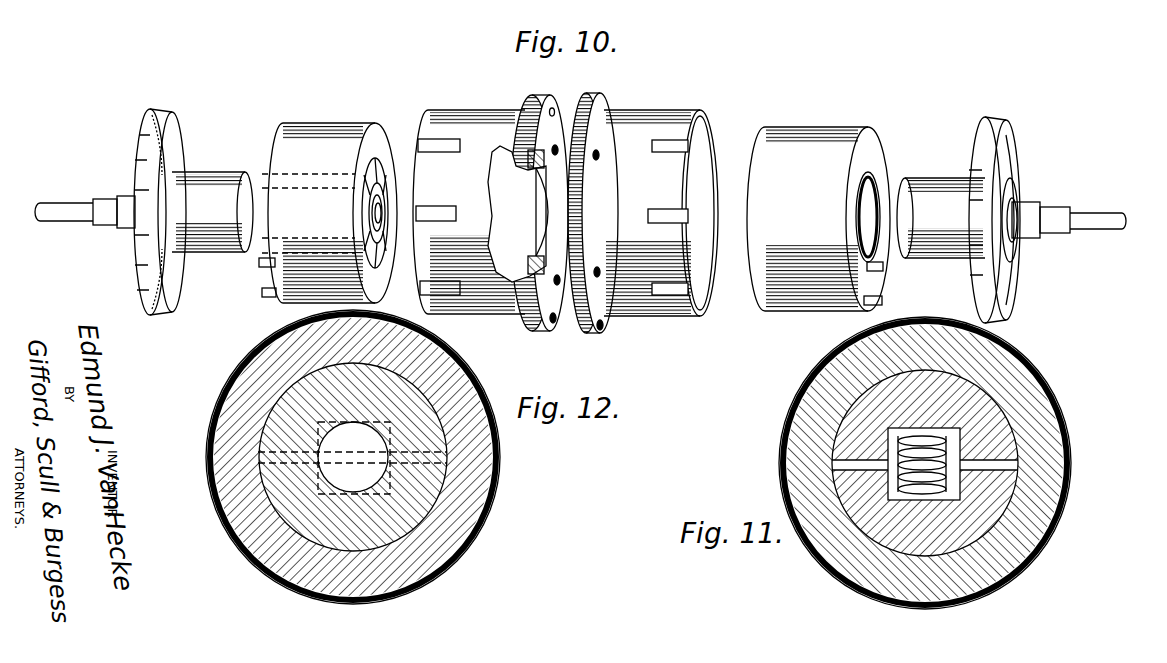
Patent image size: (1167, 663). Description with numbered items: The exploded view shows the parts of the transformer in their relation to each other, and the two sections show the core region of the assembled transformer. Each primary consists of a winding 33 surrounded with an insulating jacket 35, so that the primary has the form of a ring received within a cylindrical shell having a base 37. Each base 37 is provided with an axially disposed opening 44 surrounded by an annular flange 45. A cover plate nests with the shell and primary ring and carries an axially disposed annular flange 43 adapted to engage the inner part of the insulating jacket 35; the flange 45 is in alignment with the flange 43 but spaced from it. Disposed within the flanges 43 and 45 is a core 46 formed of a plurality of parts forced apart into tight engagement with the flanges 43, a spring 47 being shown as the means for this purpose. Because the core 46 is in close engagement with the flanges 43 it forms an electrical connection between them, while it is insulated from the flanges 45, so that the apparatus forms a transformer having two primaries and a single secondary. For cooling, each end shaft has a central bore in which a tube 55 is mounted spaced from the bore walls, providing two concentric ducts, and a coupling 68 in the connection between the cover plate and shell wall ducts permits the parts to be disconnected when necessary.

In FIG. 10, the winding 33 is at (871, 152).
In FIG. 12, the insulating jacket 35 is at (470, 368).
In FIG. 11, the insulating jacket 35 is at (1045, 388).
In FIG. 10, the base 37 is at (536, 163).
In FIG. 12, the annular flange 43 is at (478, 445).
In FIG. 11, the annular flange 43 is at (1072, 426).
In FIG. 10, the axially disposed opening 44 is at (533, 213).
In FIG. 10, the annular flange 45 is at (532, 246).
In FIG. 12, the core 46 is at (433, 482).
In FIG. 11, the core 46 is at (877, 400).
In FIG. 11, the spring 47 is at (890, 436).
In FIG. 10, the tube 55 is at (1125, 215).
In FIG. 10, the coupling 68 is at (690, 140).